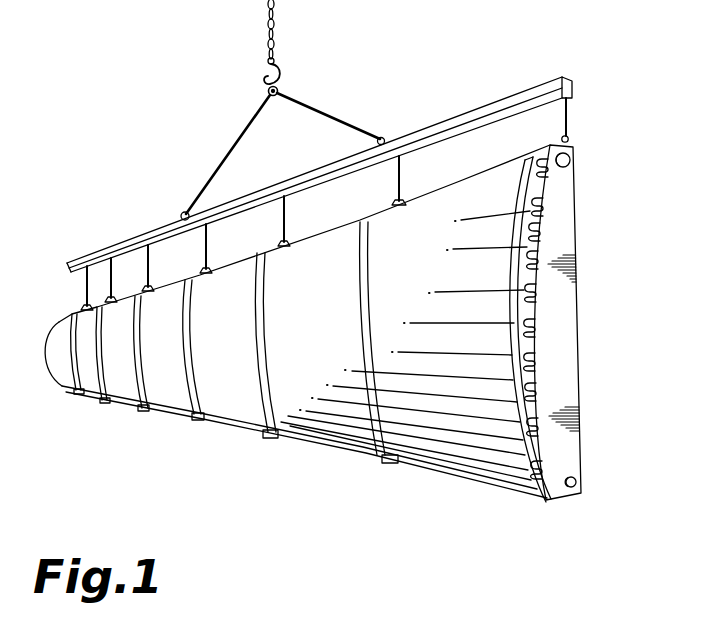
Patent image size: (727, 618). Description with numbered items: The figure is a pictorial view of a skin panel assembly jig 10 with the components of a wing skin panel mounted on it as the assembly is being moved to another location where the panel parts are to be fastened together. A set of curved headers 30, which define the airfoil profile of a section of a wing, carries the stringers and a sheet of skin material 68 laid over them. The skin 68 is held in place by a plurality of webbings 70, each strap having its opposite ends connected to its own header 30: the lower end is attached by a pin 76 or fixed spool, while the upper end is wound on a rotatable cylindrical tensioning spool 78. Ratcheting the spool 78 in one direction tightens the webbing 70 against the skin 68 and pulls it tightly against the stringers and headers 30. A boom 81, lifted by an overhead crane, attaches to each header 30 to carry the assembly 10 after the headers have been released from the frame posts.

The skin panel assembly jig 10 is at (342, 268).
The header 30 is at (563, 249).
The sheet of skin material 68 is at (477, 442).
The webbing 70 is at (64, 366).
The pin 76 is at (582, 480).
The tensioning spool 78 is at (582, 160).
The boom 81 is at (472, 117).